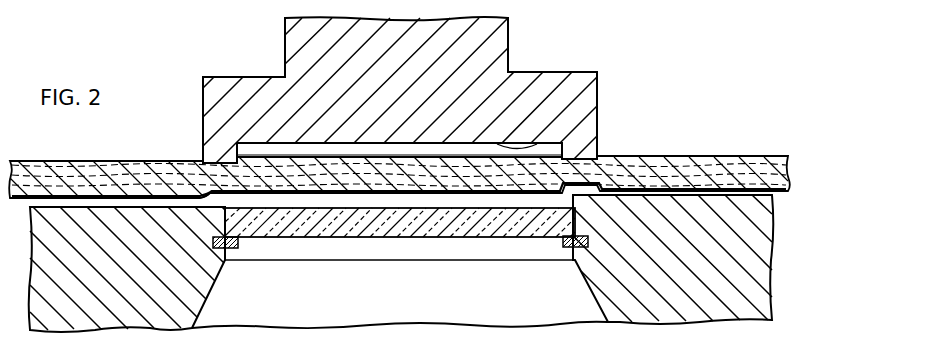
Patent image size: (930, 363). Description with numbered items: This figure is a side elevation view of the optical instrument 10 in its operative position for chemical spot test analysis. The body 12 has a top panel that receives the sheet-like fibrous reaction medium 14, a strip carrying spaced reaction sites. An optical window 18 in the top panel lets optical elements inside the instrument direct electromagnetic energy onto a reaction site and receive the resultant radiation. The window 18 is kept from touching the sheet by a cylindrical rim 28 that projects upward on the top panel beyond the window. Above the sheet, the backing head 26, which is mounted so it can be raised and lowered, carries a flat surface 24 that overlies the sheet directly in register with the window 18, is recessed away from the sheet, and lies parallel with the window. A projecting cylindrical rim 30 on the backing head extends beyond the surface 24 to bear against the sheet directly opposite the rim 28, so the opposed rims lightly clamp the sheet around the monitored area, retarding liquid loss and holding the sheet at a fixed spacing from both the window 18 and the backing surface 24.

The optical instrument 10 is at (175, 106).
The body 12 is at (774, 258).
The sheet-like fibrous reaction medium 14 is at (733, 155).
The optical window 18 is at (450, 214).
The flat surface 24 is at (560, 125).
The backing head 26 is at (511, 40).
The cylindrical rim 28 is at (218, 193).
The projecting cylindrical rim 30 is at (573, 150).